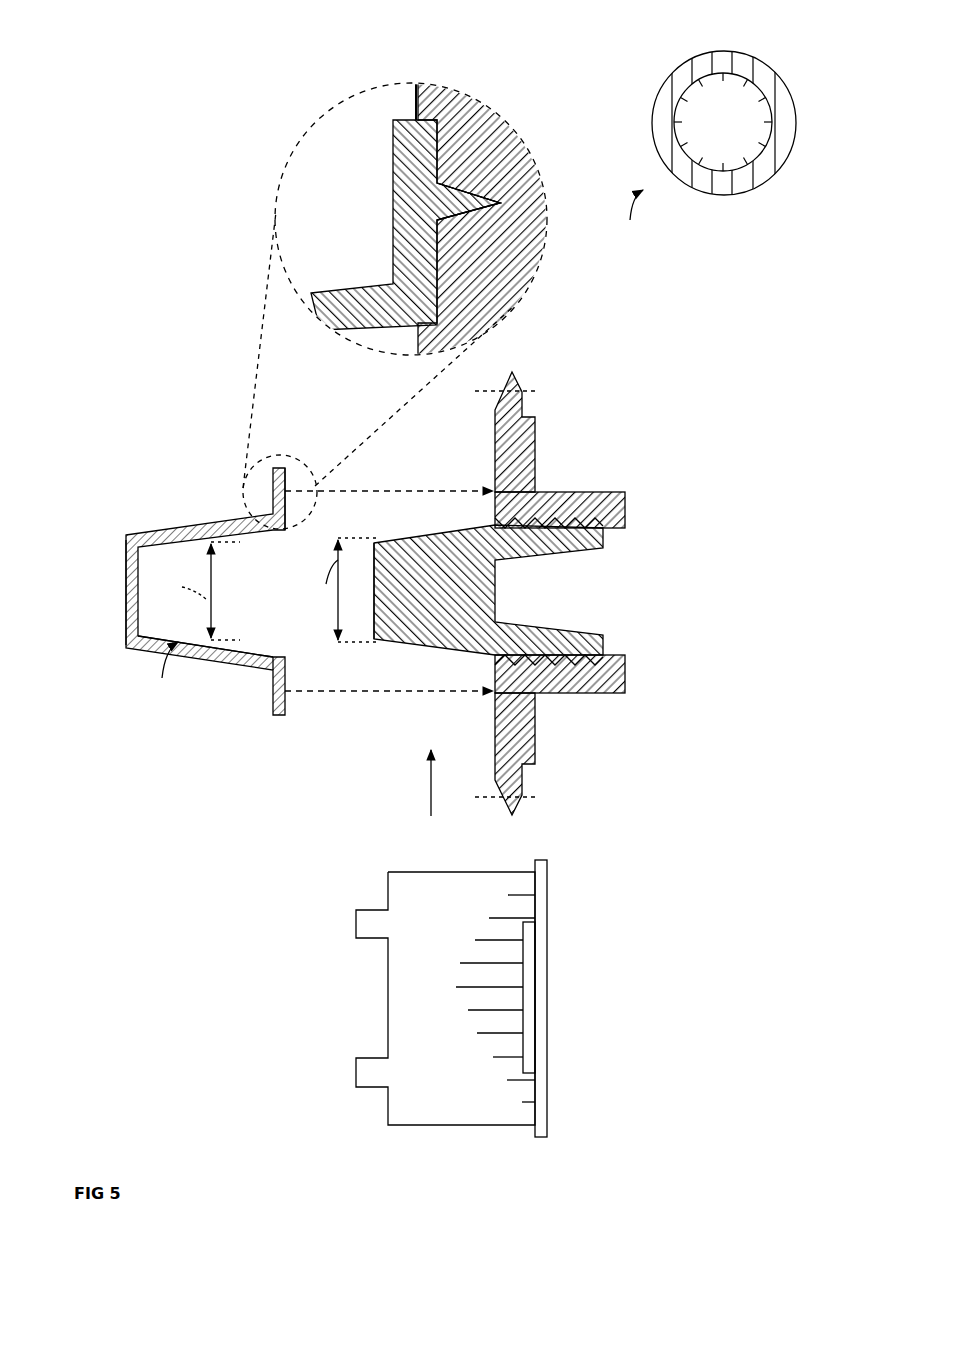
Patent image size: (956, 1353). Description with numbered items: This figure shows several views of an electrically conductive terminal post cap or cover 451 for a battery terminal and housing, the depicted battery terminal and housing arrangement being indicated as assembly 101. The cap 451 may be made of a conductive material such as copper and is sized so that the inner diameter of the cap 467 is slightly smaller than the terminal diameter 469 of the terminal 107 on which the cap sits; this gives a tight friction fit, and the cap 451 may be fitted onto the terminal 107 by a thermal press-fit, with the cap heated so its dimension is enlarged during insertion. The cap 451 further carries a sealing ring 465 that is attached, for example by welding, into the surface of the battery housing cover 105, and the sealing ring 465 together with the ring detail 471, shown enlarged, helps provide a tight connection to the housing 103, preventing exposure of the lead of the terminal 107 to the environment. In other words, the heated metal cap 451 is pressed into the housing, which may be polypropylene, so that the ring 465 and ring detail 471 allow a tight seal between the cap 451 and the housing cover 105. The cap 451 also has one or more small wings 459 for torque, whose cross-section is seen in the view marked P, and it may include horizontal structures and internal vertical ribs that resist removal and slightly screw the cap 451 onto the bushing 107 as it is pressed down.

The drive assembly 101 is at (246, 1027).
The housing 103 is at (485, 1127).
The battery housing cover 105 is at (494, 425).
The terminal 107 is at (447, 646).
The terminal post cap 451 is at (197, 492).
The small wings 459 is at (155, 550).
The sealing ring 465 is at (393, 128).
The inner diameter of the cap 467 is at (212, 640).
The terminal diameter 469 is at (338, 642).
The ring detail 471 is at (298, 490).